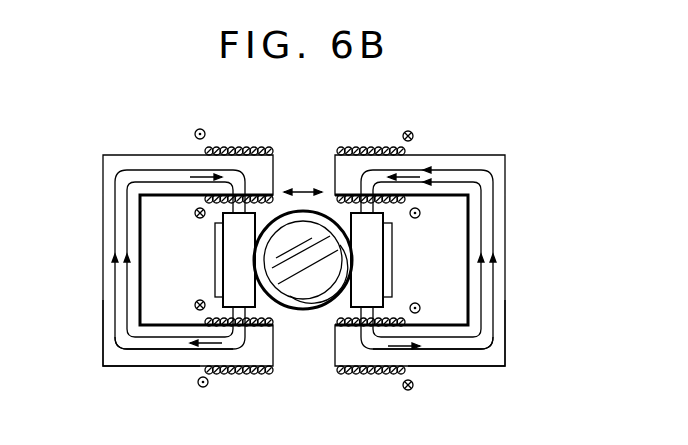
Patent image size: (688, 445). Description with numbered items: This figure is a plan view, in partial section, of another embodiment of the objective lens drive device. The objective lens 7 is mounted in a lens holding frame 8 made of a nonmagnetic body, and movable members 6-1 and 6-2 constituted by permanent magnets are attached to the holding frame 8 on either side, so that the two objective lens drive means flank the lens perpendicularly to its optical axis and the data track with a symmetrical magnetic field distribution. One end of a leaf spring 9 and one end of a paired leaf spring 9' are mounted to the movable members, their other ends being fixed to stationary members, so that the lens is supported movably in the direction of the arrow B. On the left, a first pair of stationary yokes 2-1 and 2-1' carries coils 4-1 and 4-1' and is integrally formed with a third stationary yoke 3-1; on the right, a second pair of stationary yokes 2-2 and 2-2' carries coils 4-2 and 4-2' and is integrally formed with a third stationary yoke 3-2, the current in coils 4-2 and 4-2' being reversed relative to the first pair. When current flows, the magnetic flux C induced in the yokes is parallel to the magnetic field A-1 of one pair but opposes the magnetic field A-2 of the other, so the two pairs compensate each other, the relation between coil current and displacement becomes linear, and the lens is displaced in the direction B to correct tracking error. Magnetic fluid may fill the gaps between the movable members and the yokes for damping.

The first stationary yoke 2-1 is at (186, 242).
The second stationary yoke 2-2 is at (421, 242).
The first stationary yoke 2-1' is at (119, 336).
The second stationary yoke 2-2' is at (489, 337).
The third stationary yoke 3-1 is at (111, 226).
The third stationary yoke 3-2 is at (496, 226).
The coil 4-1 is at (239, 155).
The first coil 4-2 is at (369, 155).
The coil 4-1' is at (250, 368).
The second coil 4-2' is at (369, 368).
The movable member 6-1 is at (237, 268).
The movable member 6-2 is at (376, 247).
The objective lens 7 is at (296, 300).
The lens holding frame 8 is at (309, 309).
The leaf spring 9 is at (198, 260).
The leaf spring 9' is at (404, 260).
The magnetic field A-1 is at (155, 342).
The magnetic field A-2 is at (450, 340).
The arrow B is at (302, 190).
The magnetic flux C is at (200, 176).